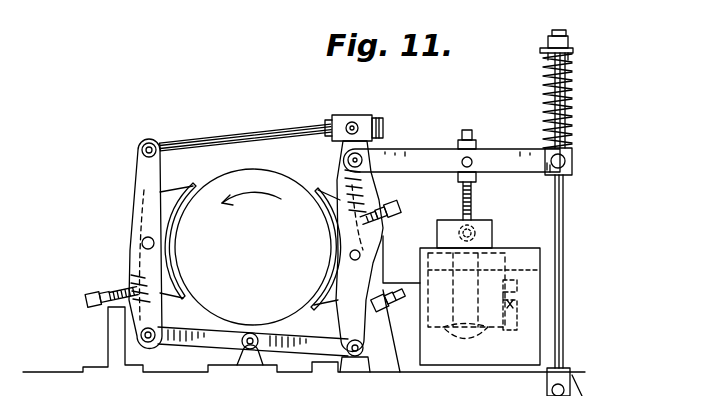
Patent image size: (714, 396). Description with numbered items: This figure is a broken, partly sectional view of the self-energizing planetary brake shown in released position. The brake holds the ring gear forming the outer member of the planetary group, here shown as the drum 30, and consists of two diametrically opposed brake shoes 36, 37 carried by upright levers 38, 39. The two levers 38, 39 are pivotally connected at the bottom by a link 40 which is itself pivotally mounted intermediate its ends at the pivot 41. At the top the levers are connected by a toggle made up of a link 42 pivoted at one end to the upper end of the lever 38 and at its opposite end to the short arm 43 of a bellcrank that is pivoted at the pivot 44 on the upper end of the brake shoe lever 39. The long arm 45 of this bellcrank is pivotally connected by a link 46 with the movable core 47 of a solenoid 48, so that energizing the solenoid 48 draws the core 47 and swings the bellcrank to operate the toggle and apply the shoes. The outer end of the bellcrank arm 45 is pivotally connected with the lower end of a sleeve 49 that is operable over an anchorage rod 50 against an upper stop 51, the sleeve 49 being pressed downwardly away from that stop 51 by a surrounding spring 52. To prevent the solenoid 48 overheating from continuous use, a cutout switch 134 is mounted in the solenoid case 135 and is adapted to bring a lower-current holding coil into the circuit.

The brake drum 30 is at (279, 174).
The brake shoe 36 is at (183, 193).
The brake shoe 37 is at (334, 200).
The upright lever 38 is at (137, 181).
The upright lever 39 is at (356, 207).
The link 40 is at (183, 341).
The pivot 41 is at (250, 350).
The link 42 is at (259, 133).
The short arm 43 is at (360, 119).
The pivot 44 is at (364, 156).
The long arm 45 is at (510, 151).
The link 46 is at (472, 198).
The movable core 47 is at (491, 243).
The solenoid 48 is at (484, 224).
The sleeve 49 is at (572, 118).
The anchorage rod 50 is at (565, 204).
The upper stop 51 is at (572, 50).
The spring 52 is at (572, 80).
The cutout switch 134 is at (535, 290).
The solenoid case 135 is at (532, 318).